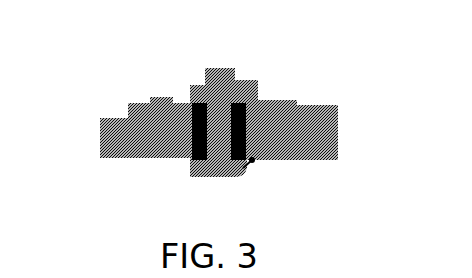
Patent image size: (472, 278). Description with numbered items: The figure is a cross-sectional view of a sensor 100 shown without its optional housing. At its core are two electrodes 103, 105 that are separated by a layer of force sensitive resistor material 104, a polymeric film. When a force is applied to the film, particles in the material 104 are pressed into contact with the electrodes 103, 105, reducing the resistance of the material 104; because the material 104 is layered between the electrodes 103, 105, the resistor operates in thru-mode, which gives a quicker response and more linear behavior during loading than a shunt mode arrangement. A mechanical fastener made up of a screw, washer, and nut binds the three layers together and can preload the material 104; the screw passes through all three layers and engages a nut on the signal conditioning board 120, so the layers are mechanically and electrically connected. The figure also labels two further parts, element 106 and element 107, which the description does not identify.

The sensor 100 is at (229, 108).
The electrode 103 is at (152, 150).
The force sensitive resistor material 104 is at (325, 140).
The electrode 105 is at (115, 130).
The protrusion 106 is at (202, 173).
The hub 107 is at (197, 88).
The signal conditioning board 120 is at (140, 112).